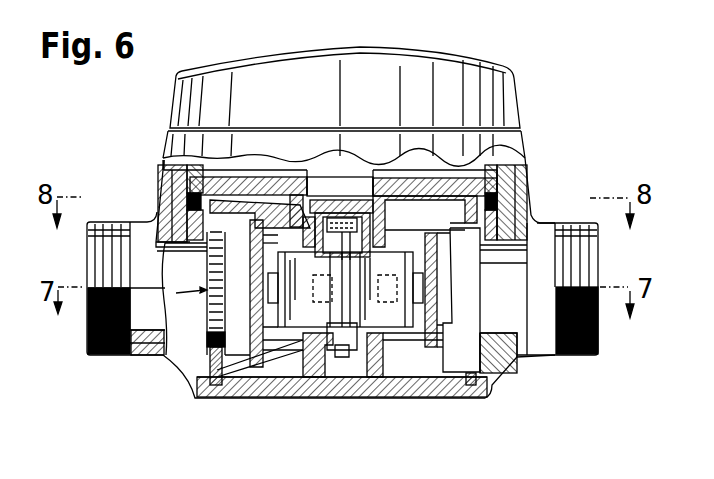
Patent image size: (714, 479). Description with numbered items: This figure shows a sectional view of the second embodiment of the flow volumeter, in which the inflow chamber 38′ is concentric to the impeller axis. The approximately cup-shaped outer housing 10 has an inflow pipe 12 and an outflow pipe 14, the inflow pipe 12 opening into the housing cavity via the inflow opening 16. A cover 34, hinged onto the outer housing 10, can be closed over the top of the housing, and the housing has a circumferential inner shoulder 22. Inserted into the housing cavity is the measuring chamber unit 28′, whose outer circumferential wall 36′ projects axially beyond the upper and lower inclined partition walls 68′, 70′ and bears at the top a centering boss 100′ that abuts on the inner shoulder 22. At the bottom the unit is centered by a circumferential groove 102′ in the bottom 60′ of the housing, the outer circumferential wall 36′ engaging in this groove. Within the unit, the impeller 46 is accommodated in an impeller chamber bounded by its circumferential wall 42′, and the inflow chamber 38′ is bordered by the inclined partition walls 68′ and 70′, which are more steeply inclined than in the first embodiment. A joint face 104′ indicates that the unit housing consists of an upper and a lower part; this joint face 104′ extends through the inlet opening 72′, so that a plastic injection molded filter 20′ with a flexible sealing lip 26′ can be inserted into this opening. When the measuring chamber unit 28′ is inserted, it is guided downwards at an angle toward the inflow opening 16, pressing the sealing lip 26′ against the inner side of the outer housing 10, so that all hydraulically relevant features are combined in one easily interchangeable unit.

The cover 34 is at (450, 78).
The outer housing 10 is at (526, 149).
The centering boss 100′ is at (537, 188).
The inner shoulder 22 is at (180, 232).
The flexible sealing lip 26′ is at (172, 232).
The inflow pipe 12 is at (87, 357).
The filter 20′ is at (130, 354).
The inflow opening 16 is at (168, 340).
The inlet opening 72′ is at (200, 338).
The upper inclined partition wall 68′ is at (305, 205).
The inflow chamber 38′ is at (222, 372).
The lower inclined partition wall 70′ is at (283, 367).
The impeller 46 is at (300, 320).
The joint face 104′ is at (430, 300).
The circumferential wall of impeller chamber 42′ is at (408, 320).
The outer circumferential wall 36′ is at (445, 352).
The bottom of housing 60′ is at (347, 387).
The measuring chamber unit 28′ is at (411, 362).
The circumferential groove 102′ is at (473, 382).
The outflow pipe 14 is at (583, 356).